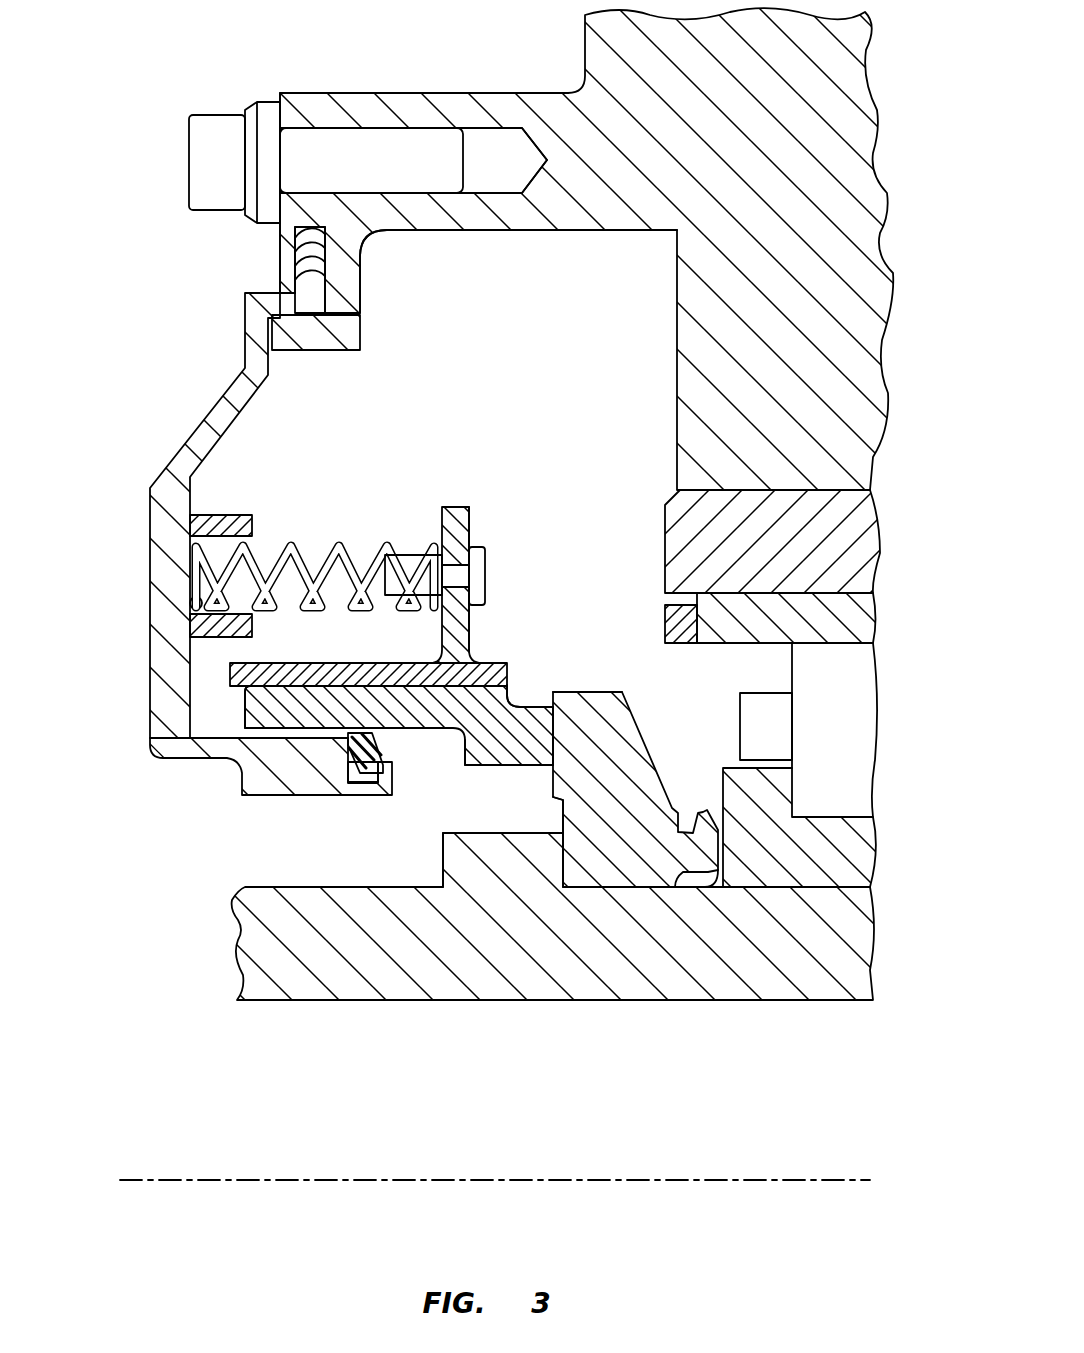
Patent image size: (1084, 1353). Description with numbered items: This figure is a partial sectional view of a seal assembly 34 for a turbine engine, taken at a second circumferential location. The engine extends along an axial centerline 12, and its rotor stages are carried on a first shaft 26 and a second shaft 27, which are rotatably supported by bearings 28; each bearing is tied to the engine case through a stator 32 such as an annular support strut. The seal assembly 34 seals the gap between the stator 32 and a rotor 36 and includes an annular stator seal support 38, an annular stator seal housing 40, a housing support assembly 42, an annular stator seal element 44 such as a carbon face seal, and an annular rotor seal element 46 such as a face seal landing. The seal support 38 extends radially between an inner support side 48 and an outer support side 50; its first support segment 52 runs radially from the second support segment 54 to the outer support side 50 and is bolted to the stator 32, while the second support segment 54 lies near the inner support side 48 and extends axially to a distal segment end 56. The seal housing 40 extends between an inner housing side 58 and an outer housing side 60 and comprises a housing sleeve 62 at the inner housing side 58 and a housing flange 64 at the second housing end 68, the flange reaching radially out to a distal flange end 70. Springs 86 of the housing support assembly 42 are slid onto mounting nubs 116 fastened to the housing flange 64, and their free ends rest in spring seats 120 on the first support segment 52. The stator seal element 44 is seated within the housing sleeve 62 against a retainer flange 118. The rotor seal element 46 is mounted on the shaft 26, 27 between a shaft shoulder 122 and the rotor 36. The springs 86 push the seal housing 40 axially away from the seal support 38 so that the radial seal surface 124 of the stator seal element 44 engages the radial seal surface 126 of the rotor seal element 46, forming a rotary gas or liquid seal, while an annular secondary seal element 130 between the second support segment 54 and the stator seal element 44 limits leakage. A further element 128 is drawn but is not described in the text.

The axial centerline 12 is at (850, 1180).
The first shaft 26 is at (553, 970).
The second shaft 27 is at (553, 916).
The bearings 28 is at (880, 718).
The stator 32 is at (555, 247).
The seal assembly 34 is at (215, 583).
The rotor 36 is at (870, 860).
The stator seal support 38 is at (159, 515).
The stator seal housing 40 is at (334, 615).
The housing support assembly 42 is at (315, 507).
The stator seal element 44 is at (505, 770).
The rotor seal element 46 is at (598, 765).
The radial inner support side 48 is at (262, 795).
The radial outer support side 50 is at (422, 158).
The first support segment 52 is at (150, 607).
The second support segment 54 is at (266, 806).
The distal segment end 56 is at (390, 782).
The radial inner housing side 58 is at (210, 738).
The radial outer housing side 60 is at (334, 615).
The housing sleeve 62 is at (262, 663).
The housing flange 64 is at (470, 633).
The second housing end 68 is at (515, 660).
The distal flange end 70 is at (334, 660).
The springs 86 is at (300, 545).
The mounting nub 116 is at (474, 533).
The retainer flange 118 is at (245, 705).
The spring seats 120 is at (222, 515).
The shaft shoulder 122 is at (485, 860).
The radial seal surface 124 is at (552, 795).
The radial seal surface 126 is at (575, 692).
The spring pin 128 is at (300, 255).
The secondary seal element 130 is at (355, 772).